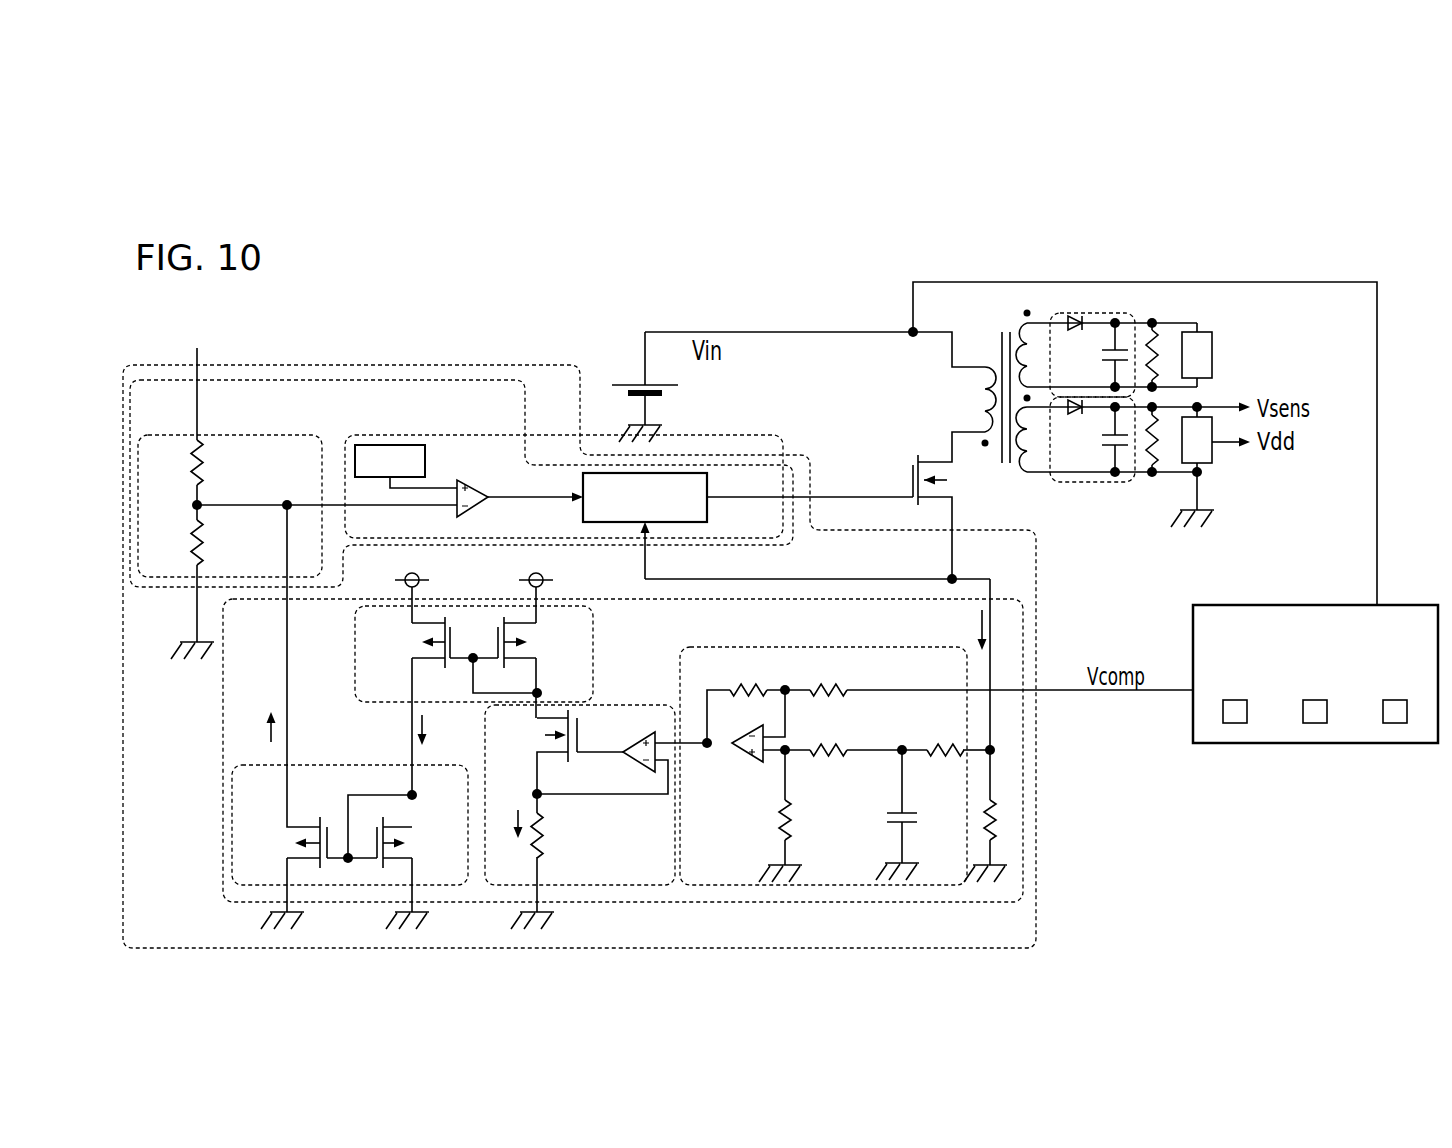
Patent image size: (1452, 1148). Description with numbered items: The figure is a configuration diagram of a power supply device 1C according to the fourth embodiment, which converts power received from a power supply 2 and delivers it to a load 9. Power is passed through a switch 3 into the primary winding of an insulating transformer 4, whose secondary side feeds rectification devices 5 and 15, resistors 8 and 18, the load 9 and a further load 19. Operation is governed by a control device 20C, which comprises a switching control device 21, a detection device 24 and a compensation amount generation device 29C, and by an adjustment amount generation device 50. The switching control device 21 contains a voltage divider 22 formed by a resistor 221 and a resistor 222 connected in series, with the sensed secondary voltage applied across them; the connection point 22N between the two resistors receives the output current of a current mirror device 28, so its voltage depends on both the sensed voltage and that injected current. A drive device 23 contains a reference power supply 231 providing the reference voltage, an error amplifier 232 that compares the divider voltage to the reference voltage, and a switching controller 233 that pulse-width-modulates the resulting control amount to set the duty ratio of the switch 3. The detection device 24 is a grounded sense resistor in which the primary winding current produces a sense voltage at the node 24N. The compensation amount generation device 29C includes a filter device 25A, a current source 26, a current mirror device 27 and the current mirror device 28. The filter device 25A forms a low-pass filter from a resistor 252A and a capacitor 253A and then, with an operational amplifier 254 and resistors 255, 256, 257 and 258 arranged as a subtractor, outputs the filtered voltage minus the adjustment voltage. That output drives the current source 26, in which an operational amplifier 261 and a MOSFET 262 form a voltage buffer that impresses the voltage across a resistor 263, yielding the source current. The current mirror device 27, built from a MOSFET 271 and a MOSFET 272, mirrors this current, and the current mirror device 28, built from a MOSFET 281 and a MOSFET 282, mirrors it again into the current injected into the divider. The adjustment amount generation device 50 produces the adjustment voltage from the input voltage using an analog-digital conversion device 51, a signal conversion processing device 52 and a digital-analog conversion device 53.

The power supply device 1C is at (697, 249).
The power supply 2 is at (632, 384).
The switch 3 is at (913, 480).
The insulating transformer 4 is at (1000, 386).
The rectification device 5 is at (1088, 313).
The resistor 8 is at (1162, 342).
The load 9 is at (1212, 343).
The rectification device 15 is at (1083, 483).
The resistor 18 is at (1152, 455).
The load 19 is at (1212, 453).
The control device 20C is at (390, 350).
The switching control device 21 is at (553, 465).
The voltage divider 22 is at (232, 435).
The resistor 221 is at (195, 462).
The resistor 222 is at (192, 562).
The connection point 22N is at (287, 505).
The drive device 23 is at (447, 435).
The reference power supply 231 is at (425, 462).
The error amplifier 232 is at (480, 512).
The switching controller 233 is at (705, 517).
The detection device 24 is at (993, 808).
The detection node 24N is at (990, 750).
The filter device 25A is at (725, 647).
The resistor 252A is at (943, 763).
The capacitor 253A is at (887, 818).
The operational amplifier 254 is at (742, 762).
The resistor 255 is at (827, 695).
The resistor 256 is at (737, 686).
The resistor 257 is at (833, 760).
The resistor 258 is at (776, 838).
The current source 26 is at (615, 705).
The operational amplifier 261 is at (640, 762).
The MOSFET 262 is at (540, 727).
The resistor 263 is at (545, 855).
The current mirror device 27 is at (593, 620).
The MOSFET 271 is at (525, 652).
The MOSFET 272 is at (418, 635).
The current mirror device 28 is at (330, 765).
The MOSFET 281 is at (402, 838).
The MOSFET 282 is at (292, 835).
The compensation amount generation device 29C is at (223, 880).
The adjustment amount generation device 50 is at (1315, 706).
The analog-digital conversion device 51 is at (1397, 727).
The signal conversion processing device 52 is at (1317, 727).
The digital-analog conversion device 53 is at (1237, 727).